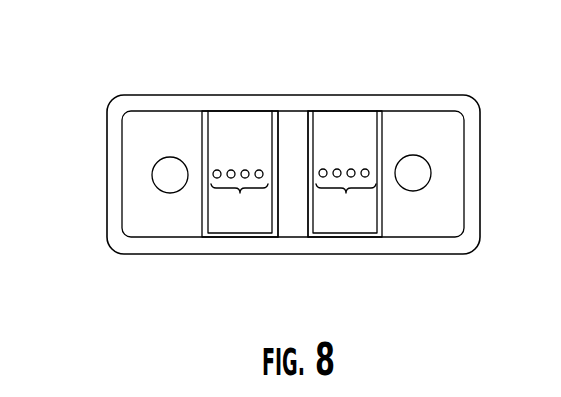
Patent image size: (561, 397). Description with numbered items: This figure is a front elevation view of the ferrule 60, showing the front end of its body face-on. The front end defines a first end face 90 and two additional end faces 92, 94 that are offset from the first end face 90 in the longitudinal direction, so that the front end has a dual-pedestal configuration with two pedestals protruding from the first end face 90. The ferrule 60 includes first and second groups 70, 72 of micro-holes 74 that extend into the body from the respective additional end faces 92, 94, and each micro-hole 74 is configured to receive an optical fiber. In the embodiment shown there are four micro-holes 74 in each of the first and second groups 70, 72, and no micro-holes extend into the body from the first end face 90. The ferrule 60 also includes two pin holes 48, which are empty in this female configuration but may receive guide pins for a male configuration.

The ferrule 60 is at (181, 72).
The first end face 90 is at (285, 123).
The additional end face 92 is at (245, 123).
The additional end face 94 is at (352, 123).
The first group of micro-holes 70 is at (159, 236).
The second group of micro-holes 72 is at (346, 193).
The micro-hole 74 is at (214, 172).
The pin hole 48 is at (410, 191).